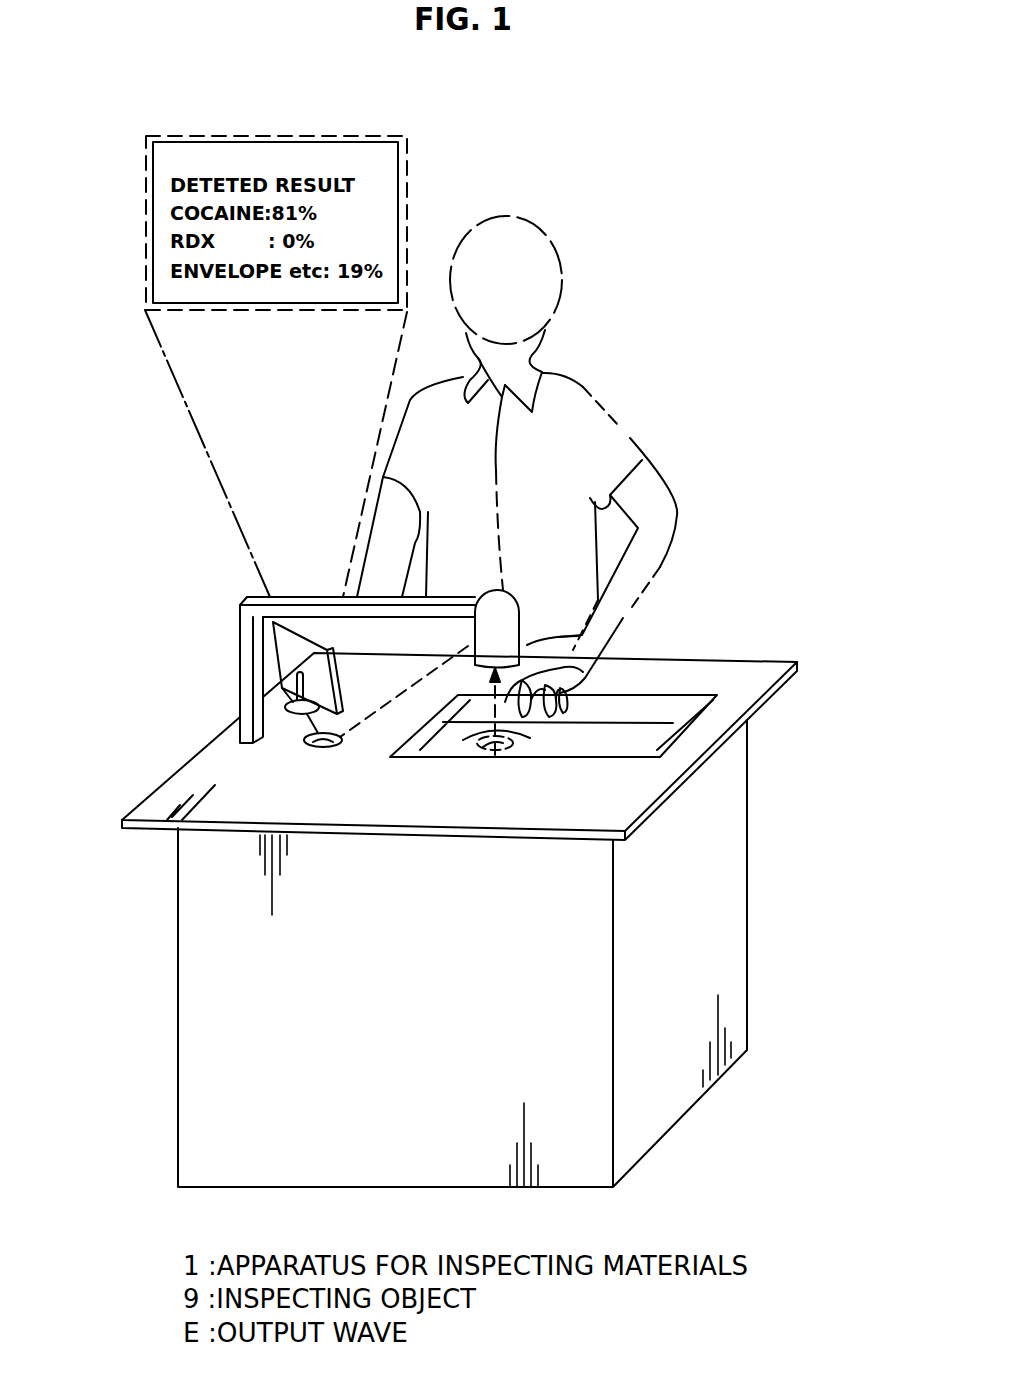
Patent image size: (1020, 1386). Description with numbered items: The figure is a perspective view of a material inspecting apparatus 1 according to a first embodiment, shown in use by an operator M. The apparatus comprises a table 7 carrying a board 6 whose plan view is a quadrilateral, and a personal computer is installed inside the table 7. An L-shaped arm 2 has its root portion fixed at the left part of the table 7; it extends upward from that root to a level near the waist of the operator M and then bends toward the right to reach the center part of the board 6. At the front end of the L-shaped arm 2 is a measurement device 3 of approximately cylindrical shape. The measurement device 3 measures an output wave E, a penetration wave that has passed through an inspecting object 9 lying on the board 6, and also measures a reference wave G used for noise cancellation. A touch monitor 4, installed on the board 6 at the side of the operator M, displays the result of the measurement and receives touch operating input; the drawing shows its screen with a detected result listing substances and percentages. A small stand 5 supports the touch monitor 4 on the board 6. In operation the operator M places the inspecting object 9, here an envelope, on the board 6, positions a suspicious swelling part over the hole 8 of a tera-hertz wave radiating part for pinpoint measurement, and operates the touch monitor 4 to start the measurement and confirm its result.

The material inspecting apparatus 1 is at (180, 556).
The L-shaped arm 2 is at (310, 598).
The measurement device 3 is at (491, 606).
The touch monitor 4 is at (287, 643).
The display stand 5 is at (292, 703).
The board 6 is at (245, 785).
The table 7 is at (176, 943).
The hole 8 is at (487, 750).
The inspecting object 9 is at (545, 758).
The reference wave G is at (358, 722).
The output wave E is at (490, 712).
The operator M is at (620, 412).